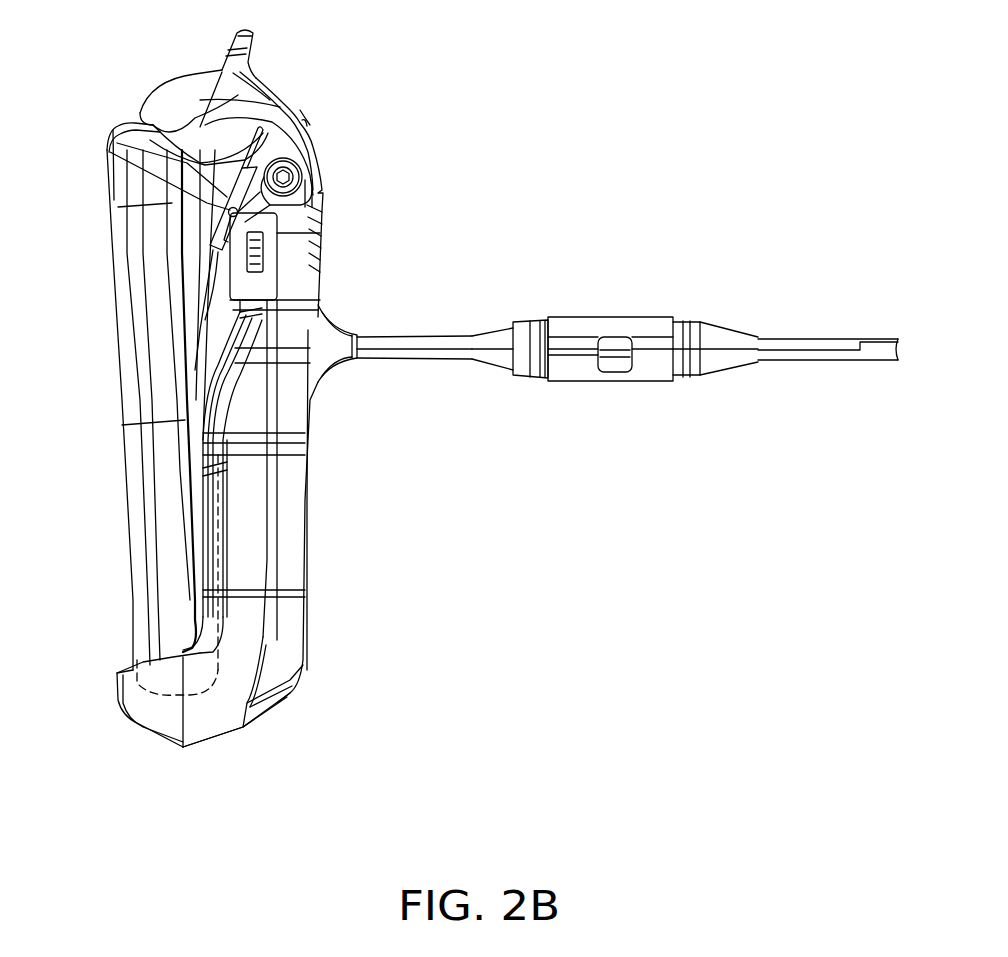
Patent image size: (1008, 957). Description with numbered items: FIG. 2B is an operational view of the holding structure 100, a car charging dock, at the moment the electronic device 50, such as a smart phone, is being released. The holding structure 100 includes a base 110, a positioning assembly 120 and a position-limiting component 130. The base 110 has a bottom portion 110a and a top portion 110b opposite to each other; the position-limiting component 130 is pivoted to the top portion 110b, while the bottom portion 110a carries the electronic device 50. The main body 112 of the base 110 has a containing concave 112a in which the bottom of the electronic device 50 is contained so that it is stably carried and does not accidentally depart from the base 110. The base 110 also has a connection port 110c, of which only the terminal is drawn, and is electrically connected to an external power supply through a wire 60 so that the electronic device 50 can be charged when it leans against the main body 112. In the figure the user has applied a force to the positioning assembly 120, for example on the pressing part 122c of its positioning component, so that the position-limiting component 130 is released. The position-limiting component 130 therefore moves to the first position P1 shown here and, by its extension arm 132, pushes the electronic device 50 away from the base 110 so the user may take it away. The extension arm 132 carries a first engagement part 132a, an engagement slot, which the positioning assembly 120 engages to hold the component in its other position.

The holding structure 100 is at (418, 94).
The base 110 is at (332, 492).
The bottom portion 110a is at (305, 683).
The top portion 110b is at (329, 190).
The connection port 110c is at (197, 287).
The main body 112 is at (290, 415).
The containing concave 112a is at (193, 697).
The positioning assembly 120 is at (270, 245).
The pressing part 122c is at (128, 140).
The position-limiting component 130 is at (190, 78).
The extension arm 132 is at (220, 207).
The first engagement part 132a is at (215, 250).
The electronic device 50 is at (157, 350).
The wire 60 is at (880, 350).
The first position P1 is at (300, 94).